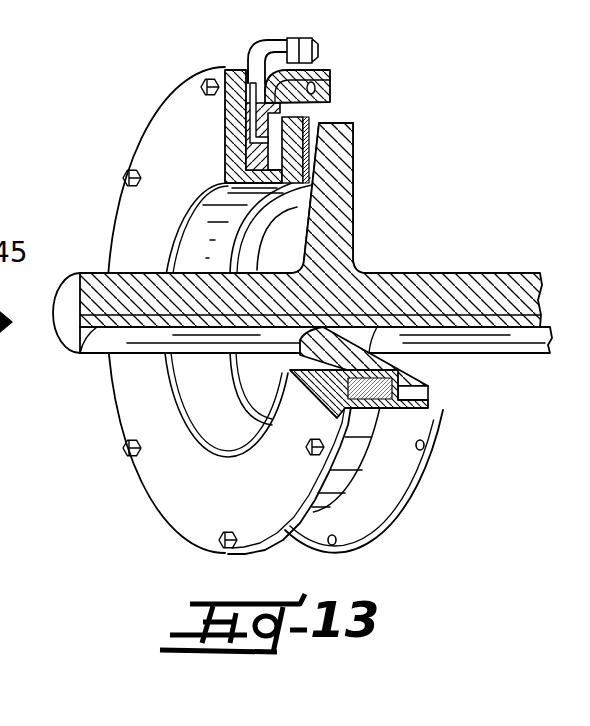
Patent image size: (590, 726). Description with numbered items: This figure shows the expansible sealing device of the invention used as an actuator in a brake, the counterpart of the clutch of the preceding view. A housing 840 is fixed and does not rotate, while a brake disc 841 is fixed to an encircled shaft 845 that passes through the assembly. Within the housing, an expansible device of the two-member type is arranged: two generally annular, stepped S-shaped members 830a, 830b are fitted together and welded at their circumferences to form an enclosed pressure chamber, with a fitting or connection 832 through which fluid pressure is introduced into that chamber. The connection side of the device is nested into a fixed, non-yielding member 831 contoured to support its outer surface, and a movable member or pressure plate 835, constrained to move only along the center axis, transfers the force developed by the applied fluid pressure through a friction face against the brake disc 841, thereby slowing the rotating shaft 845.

The housing 840 is at (277, 305).
The brake disc 841 is at (280, 291).
The flange disc 831 is at (224, 92).
The lubricant fitting 832 is at (333, 74).
The hub flange 835 is at (355, 147).
The seal ring 830a is at (280, 165).
The seal housing 830b is at (265, 126).
The shaft 845 is at (467, 292).